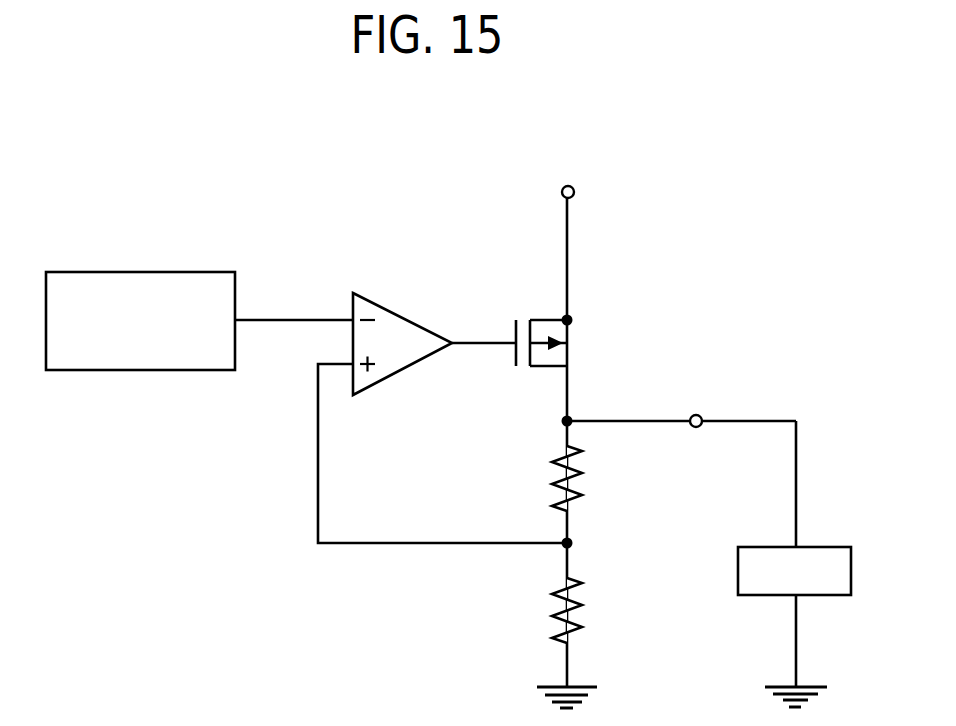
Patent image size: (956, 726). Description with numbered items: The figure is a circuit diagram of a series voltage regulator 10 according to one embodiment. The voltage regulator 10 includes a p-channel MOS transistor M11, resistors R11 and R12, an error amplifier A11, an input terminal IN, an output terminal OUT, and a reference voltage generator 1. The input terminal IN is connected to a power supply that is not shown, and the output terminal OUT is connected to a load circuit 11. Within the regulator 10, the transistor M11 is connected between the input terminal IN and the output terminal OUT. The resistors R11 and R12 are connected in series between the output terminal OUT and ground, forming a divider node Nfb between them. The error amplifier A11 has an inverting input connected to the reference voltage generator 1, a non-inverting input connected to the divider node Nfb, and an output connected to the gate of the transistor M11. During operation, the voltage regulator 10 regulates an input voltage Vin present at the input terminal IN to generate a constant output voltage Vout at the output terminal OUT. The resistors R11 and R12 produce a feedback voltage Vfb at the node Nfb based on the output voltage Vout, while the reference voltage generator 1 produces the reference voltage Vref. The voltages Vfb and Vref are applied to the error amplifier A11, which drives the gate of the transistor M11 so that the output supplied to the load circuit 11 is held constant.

The reference voltage generator 1 is at (200, 272).
The voltage regulator 10 is at (428, 150).
The load circuit 11 is at (838, 547).
The error amplifier A11 is at (410, 318).
The p-channel MOS transistor M11 is at (536, 326).
The resistor R11 is at (591, 478).
The resistor R12 is at (591, 610).
The divider node Nfb is at (573, 541).
The input terminal IN is at (574, 190).
The output terminal OUT is at (698, 428).